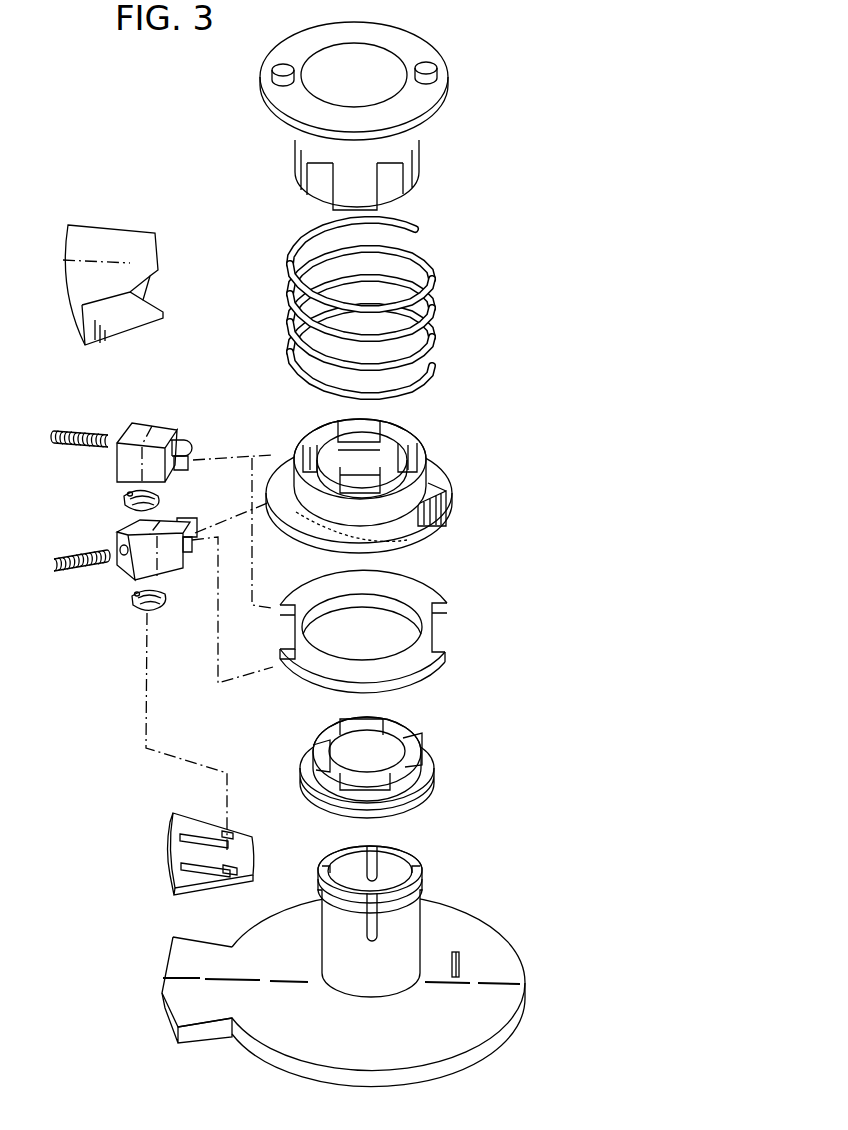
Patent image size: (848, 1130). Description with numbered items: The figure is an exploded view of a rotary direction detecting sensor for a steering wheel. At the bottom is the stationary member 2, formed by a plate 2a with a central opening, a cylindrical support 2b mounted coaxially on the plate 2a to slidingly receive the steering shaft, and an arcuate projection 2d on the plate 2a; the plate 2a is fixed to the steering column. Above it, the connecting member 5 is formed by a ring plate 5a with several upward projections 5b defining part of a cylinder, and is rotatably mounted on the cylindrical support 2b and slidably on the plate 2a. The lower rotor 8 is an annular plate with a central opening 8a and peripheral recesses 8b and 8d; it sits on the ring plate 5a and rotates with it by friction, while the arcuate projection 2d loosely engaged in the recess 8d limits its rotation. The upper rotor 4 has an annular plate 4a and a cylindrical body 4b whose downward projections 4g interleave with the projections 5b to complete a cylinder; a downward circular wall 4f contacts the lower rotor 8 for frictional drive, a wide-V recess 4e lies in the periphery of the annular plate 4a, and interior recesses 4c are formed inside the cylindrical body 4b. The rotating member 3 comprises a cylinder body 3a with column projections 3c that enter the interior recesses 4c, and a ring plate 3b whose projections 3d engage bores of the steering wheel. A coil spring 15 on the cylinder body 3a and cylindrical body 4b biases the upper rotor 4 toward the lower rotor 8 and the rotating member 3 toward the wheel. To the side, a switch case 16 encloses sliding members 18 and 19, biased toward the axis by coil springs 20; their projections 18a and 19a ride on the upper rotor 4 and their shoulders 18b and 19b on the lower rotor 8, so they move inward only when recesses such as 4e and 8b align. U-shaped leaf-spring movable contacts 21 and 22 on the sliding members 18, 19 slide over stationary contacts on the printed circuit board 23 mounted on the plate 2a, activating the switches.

The stationary member 2 is at (369, 966).
The plate 2a is at (521, 957).
The cylindrical support 2b is at (410, 923).
The arcuate projection 2d is at (460, 956).
The rotating member 3 is at (353, 116).
The cylinder body 3a is at (412, 138).
The ring plate 3b is at (265, 102).
The column projections 3c is at (378, 182).
The projections 3d is at (433, 66).
The upper rotor 4 is at (403, 446).
The annular plate 4a is at (453, 497).
The cylindrical body 4b is at (418, 477).
The interior recesses 4c is at (398, 456).
The recess 4e is at (372, 546).
The circular wall 4f is at (425, 518).
The projections 4g is at (383, 447).
The connecting member 5 is at (382, 764).
The ring plate 5a is at (434, 783).
The projections 5b is at (314, 752).
The lower rotor 8 is at (376, 631).
The central opening 8a is at (422, 640).
The recess 8b is at (278, 650).
The recess 8d is at (437, 630).
The coil spring 15 is at (428, 262).
The switch case 16 is at (128, 230).
The sliding member 18 is at (196, 429).
The projection 18a is at (188, 442).
The shoulder 18b is at (190, 463).
The sliding member 19 is at (170, 559).
The projection 19a is at (194, 518).
The shoulder 19b is at (190, 545).
The coil springs 20 is at (80, 432).
The movable contact 21 is at (125, 498).
The movable contact 22 is at (134, 598).
The printed circuit board 23 is at (168, 850).